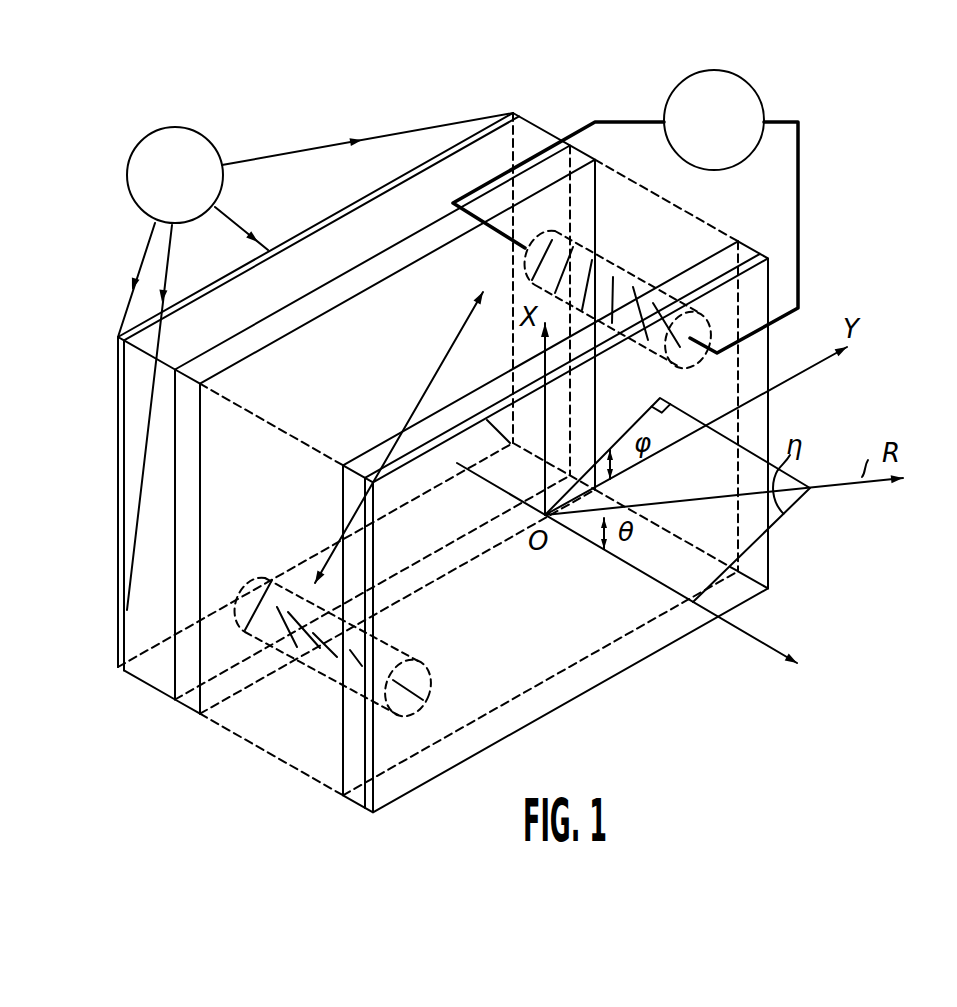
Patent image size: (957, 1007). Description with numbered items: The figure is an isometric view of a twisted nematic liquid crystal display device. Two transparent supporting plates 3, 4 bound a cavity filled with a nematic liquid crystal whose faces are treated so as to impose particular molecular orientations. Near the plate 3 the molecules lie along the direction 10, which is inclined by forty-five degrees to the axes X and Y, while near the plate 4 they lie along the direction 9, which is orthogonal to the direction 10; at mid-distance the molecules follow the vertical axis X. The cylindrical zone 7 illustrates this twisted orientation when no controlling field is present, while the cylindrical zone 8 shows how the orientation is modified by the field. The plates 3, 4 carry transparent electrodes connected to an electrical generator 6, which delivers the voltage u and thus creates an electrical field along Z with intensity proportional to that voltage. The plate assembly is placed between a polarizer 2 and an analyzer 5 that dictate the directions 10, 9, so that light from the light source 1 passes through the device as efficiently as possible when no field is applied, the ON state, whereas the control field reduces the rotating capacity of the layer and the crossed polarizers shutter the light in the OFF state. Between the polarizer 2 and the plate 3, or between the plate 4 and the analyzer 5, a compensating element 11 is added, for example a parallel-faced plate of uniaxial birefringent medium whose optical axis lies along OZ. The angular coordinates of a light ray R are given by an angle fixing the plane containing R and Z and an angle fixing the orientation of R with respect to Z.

The light source 1 is at (209, 141).
The polarizer 2 is at (117, 670).
The transparent supporting plate 3 is at (187, 700).
The transparent supporting plate 4 is at (353, 797).
The analyzer 5 is at (370, 808).
The electrical generator 6 is at (678, 92).
The cylindrical zone 7 is at (627, 262).
The cylindrical zone 8 is at (325, 680).
The direction 9 is at (577, 543).
The direction 10 is at (457, 340).
The compensating element 11 is at (155, 675).